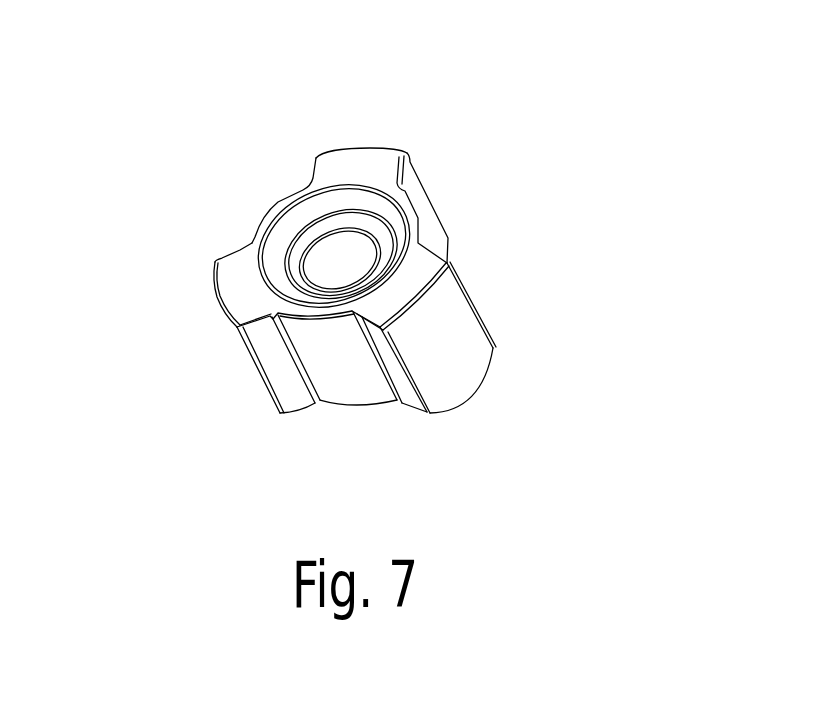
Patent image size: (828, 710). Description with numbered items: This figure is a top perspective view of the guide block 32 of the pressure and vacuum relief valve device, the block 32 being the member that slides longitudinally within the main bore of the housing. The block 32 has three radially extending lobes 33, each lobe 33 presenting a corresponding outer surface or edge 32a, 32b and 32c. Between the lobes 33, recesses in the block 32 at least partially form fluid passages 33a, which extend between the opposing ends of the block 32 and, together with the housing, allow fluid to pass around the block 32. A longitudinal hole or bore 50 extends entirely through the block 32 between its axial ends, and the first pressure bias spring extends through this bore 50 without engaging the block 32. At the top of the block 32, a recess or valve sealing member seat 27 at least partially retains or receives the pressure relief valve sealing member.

The guide block 32 is at (483, 76).
The outer surface or edge 32a is at (370, 148).
The outer surface or edge 32b is at (246, 368).
The outer surface or edge 32c is at (450, 363).
The lobe 33 is at (337, 163).
The fluid passage 33a is at (417, 202).
The recess 27 is at (292, 230).
The longitudinal hole or bore 50 is at (347, 247).